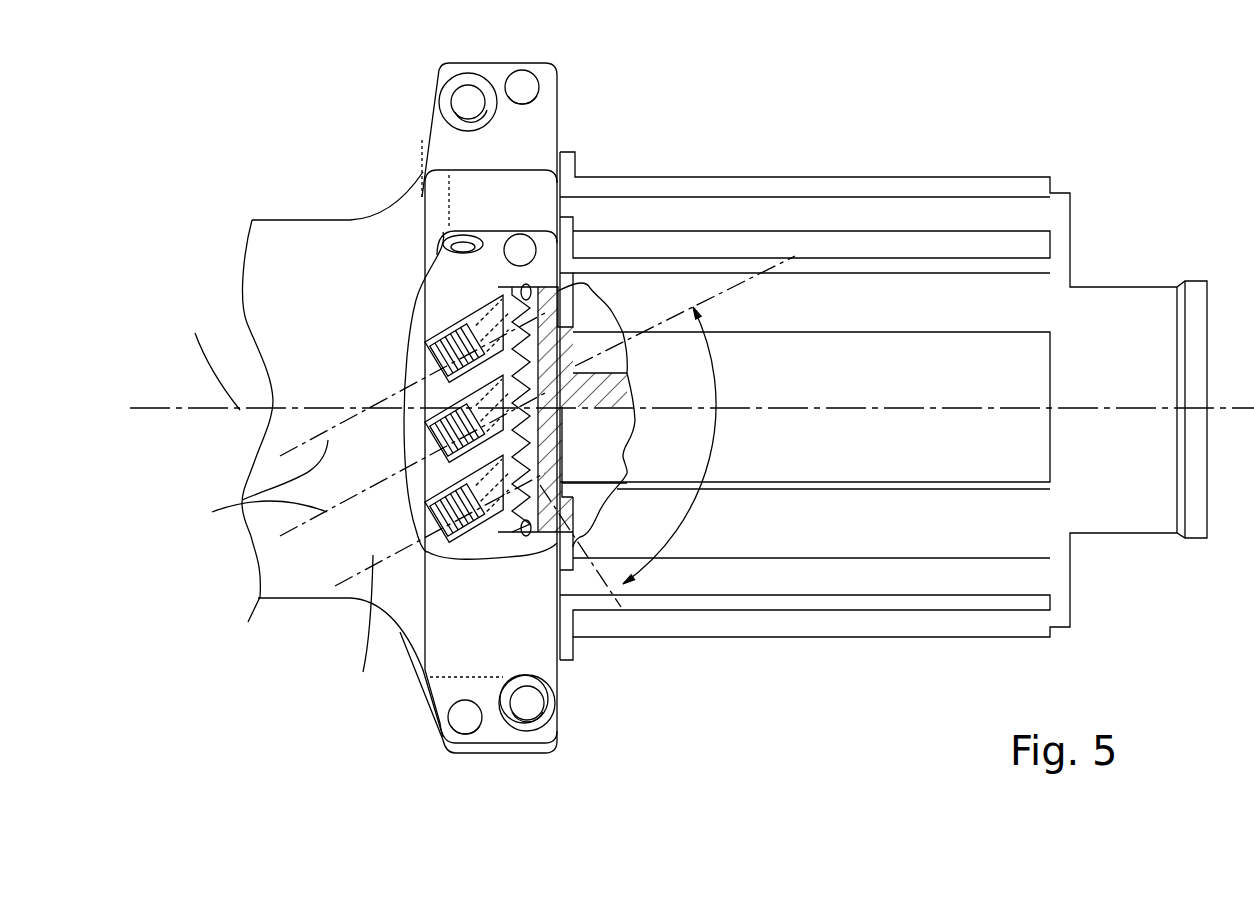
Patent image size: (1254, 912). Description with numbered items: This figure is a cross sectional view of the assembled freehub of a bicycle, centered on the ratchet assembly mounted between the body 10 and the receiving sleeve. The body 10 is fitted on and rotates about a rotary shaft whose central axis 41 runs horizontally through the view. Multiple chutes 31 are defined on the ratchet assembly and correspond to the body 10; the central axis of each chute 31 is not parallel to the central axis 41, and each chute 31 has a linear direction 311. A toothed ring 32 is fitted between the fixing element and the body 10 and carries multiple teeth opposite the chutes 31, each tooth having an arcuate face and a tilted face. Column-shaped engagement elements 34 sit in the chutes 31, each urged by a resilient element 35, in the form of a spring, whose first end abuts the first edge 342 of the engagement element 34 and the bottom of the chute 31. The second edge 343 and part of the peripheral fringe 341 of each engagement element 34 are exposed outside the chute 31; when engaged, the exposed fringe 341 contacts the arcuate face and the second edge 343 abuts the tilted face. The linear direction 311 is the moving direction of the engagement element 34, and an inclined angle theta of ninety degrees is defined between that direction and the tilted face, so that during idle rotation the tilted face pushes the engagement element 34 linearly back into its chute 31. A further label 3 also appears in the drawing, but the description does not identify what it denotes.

The body 10 is at (277, 212).
The central axis 41 is at (209, 356).
The linear direction 311 is at (242, 500).
The engagement element 34 is at (420, 300).
The chute 31 is at (468, 240).
The toothed ring 32 is at (522, 240).
The resilient element 35 is at (440, 318).
The first edge 342 is at (420, 448).
The second edge 343 is at (605, 400).
The peripheral fringe 341 is at (526, 536).
The chuck assembly 3 is at (883, 406).
The inclined angle theta is at (667, 431).